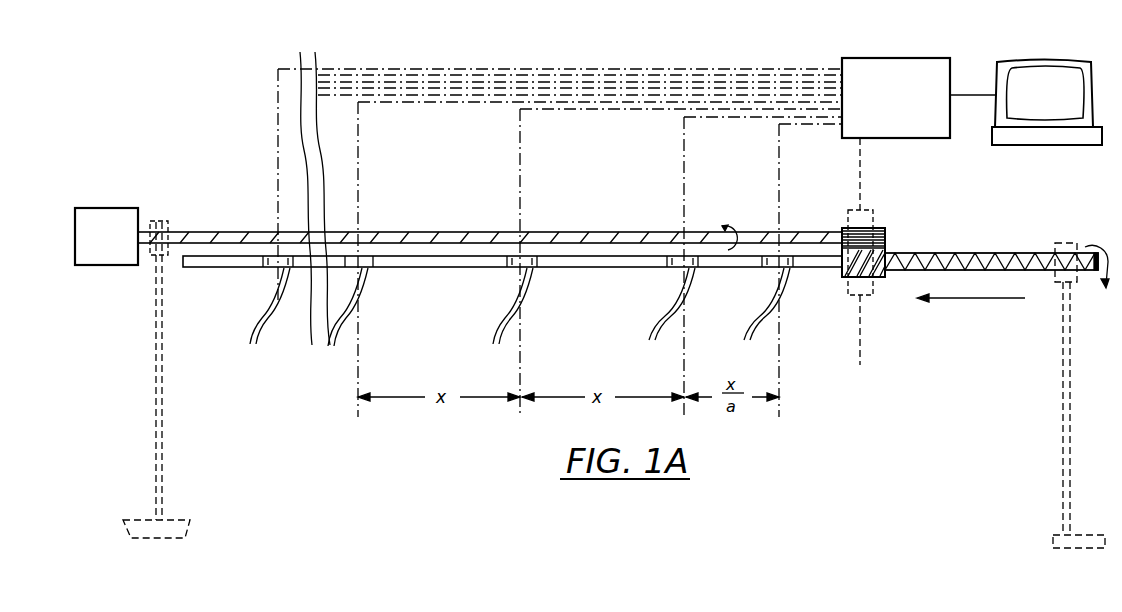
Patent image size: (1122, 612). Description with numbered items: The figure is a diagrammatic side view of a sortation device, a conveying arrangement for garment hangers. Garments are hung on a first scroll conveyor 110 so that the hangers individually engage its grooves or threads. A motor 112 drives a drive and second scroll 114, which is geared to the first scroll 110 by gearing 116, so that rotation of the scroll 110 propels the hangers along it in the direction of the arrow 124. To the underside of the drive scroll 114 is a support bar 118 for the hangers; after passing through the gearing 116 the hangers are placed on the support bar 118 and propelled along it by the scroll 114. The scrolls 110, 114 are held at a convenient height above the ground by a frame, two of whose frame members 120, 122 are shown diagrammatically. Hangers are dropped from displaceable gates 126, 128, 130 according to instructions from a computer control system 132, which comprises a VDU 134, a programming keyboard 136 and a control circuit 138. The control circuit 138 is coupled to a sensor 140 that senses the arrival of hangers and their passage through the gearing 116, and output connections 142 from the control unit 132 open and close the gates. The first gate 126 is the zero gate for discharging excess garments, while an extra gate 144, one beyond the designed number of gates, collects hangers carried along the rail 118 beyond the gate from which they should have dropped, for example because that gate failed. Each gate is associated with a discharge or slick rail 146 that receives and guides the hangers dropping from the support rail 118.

The first scroll conveyor 110 is at (968, 253).
The motor 112 is at (129, 210).
The drive and second scroll 114 is at (224, 232).
The gearing 116 is at (845, 230).
The support bar 118 is at (439, 268).
The frame member 120 is at (157, 410).
The frame member 122 is at (1063, 397).
The arrow 124 is at (971, 312).
The first gate 126 is at (770, 256).
The displaceable gate 128 is at (670, 256).
The displaceable gate 130 is at (516, 256).
The computer control system 132 is at (870, 58).
The VDU 134 is at (1000, 69).
The programming keyboard 136 is at (1052, 132).
The control circuit 138 is at (917, 73).
The sensor 140 is at (865, 263).
The output connections 142 is at (570, 70).
The N+1 gate 144 is at (274, 264).
The slick rail 146 is at (256, 327).